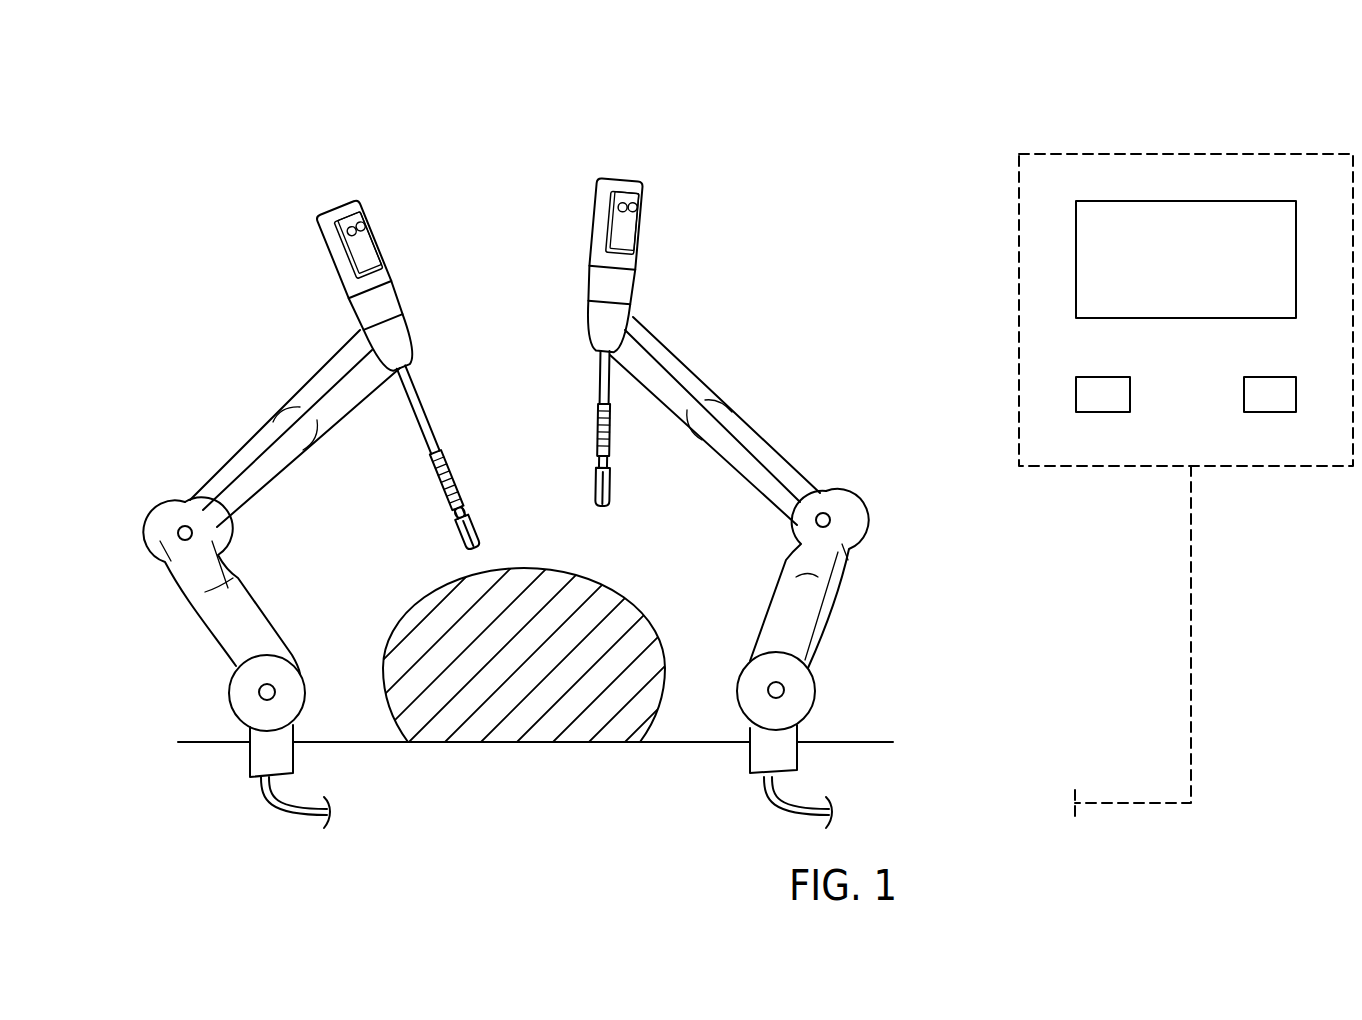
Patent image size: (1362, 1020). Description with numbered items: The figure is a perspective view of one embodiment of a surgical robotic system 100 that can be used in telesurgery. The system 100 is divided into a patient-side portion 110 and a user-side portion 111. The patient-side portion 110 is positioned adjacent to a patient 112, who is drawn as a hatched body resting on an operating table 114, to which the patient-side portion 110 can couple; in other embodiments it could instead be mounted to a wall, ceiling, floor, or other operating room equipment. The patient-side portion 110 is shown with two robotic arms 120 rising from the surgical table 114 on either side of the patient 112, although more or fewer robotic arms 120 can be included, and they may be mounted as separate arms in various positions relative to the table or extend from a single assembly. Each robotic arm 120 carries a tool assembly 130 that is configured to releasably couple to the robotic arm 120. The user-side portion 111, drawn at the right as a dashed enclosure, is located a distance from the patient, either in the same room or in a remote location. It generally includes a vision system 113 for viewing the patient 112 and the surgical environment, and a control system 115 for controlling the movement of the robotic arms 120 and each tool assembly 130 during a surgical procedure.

The surgical robotic system 100 is at (540, 95).
The patient-side portion 110 is at (795, 245).
The user-side portion 111 is at (1266, 126).
The patient 112 is at (630, 603).
The vision system 113 is at (1133, 200).
The operating table 114 is at (866, 741).
The control system 115 is at (1100, 413).
The robotic arm 120 is at (244, 447).
The tool assembly 130 is at (388, 240).